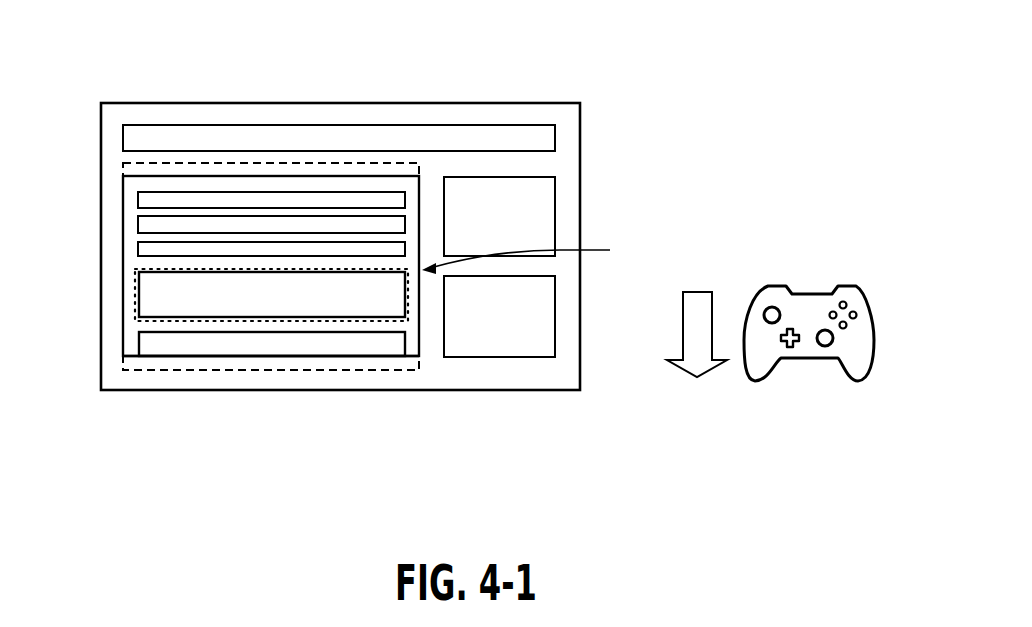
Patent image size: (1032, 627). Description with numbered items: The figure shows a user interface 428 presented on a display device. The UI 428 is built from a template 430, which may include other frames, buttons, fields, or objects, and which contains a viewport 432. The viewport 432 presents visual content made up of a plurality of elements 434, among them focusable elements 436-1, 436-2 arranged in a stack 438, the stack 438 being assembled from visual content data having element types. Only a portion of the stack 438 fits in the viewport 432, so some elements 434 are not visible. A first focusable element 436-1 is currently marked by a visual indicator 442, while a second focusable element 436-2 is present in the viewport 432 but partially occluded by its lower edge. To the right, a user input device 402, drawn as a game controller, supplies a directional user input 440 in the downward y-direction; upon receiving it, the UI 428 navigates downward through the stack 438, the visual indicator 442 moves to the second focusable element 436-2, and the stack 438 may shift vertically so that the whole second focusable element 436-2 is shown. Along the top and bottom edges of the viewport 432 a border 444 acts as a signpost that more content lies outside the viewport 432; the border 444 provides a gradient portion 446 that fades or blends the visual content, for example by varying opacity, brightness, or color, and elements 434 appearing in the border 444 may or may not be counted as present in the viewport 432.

The user interface (UI) 428 is at (820, 61).
The template 430 is at (580, 140).
The viewport 432 is at (352, 358).
The elements 434 is at (139, 196).
The first focusable element 436-1 is at (139, 317).
The second focusable element 436-2 is at (139, 350).
The stack 438 is at (534, 257).
The directional user input 440 is at (697, 291).
The visual indicator 442 is at (136, 275).
The border 444 is at (123, 371).
The gradient portion 446 is at (189, 361).
The user input device 402 is at (874, 327).